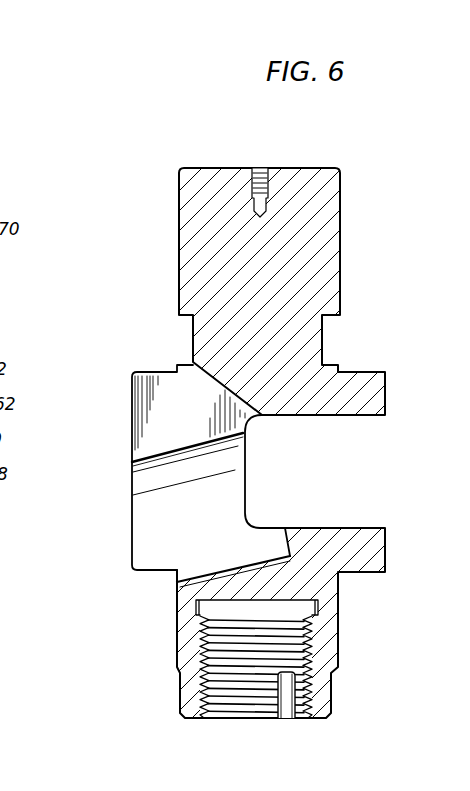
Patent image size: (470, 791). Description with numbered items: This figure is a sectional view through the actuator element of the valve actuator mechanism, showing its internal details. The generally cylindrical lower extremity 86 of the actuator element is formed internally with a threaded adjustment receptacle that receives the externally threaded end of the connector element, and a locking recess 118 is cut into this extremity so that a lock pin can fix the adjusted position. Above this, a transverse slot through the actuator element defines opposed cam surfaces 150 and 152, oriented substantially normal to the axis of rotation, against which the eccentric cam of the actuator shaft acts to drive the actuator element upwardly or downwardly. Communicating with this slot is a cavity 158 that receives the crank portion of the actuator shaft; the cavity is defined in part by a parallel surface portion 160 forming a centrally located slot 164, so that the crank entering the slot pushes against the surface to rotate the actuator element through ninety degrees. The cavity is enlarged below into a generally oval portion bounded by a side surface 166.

The cam surface 150 is at (355, 415).
The cam surface 152 is at (337, 528).
The lower extremity of the actuator element 86 is at (193, 675).
The locking recess 118 is at (283, 696).
The parallel surface portion 160 is at (138, 428).
The centrally located slot 164 is at (194, 421).
The side surface 166 is at (153, 481).
The cavity 158 is at (212, 550).